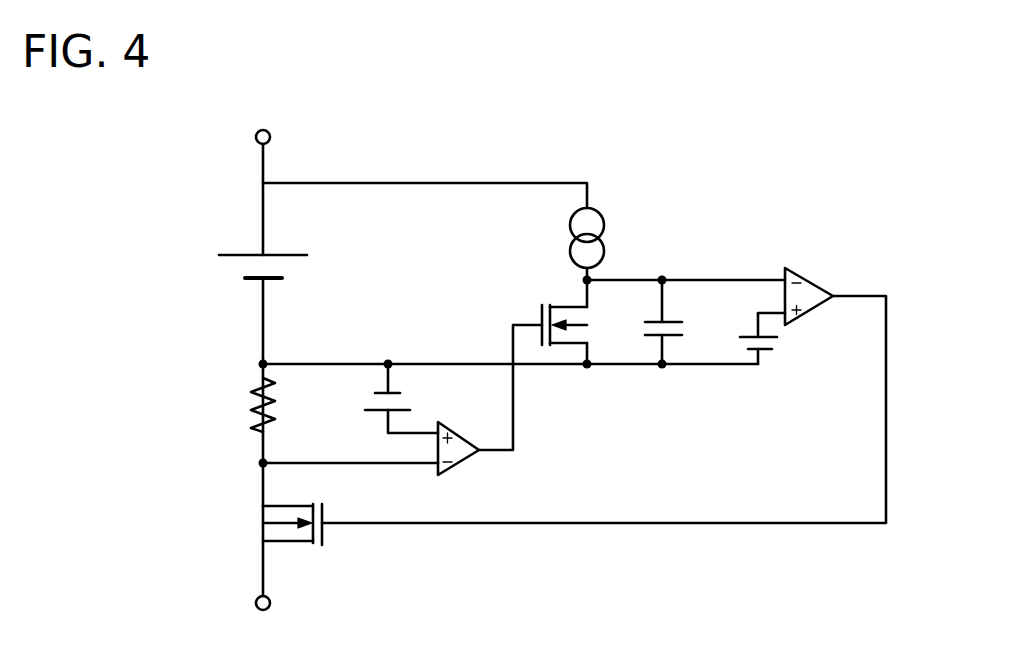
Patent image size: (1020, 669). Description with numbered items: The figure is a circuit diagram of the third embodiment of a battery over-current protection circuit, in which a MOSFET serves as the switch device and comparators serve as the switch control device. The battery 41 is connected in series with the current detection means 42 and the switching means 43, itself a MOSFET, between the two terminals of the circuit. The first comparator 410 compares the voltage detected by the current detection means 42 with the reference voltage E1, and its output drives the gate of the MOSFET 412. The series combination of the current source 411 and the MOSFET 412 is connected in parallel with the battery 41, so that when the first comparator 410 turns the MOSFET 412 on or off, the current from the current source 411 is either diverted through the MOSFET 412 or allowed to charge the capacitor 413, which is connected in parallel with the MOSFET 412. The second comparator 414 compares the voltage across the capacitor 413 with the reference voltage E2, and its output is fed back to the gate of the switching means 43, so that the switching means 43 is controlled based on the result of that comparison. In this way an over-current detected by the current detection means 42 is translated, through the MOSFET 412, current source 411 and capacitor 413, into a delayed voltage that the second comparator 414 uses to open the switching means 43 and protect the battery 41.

The battery 41 is at (245, 266).
The current detection means 42 is at (253, 398).
The switching means 43 is at (252, 530).
The first comparator 410 is at (466, 463).
The current source 411 is at (565, 233).
The MOSFET 412 is at (533, 310).
The capacitor 413 is at (675, 310).
The second comparator 414 is at (822, 282).
The reference voltage E1 is at (405, 400).
The reference voltage E2 is at (773, 345).